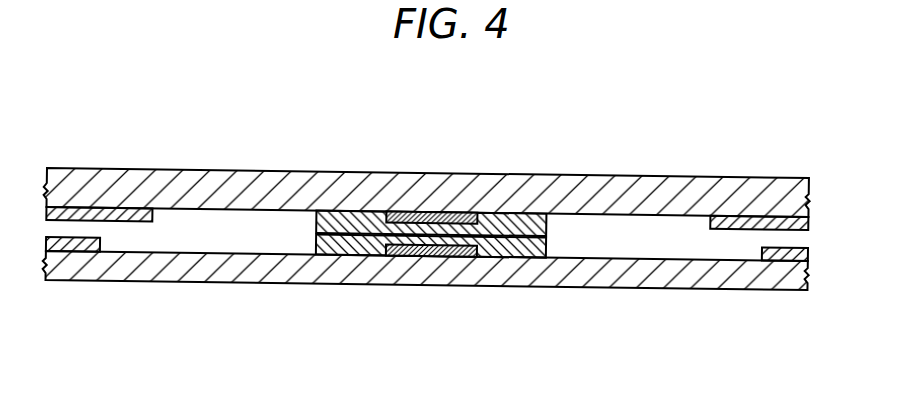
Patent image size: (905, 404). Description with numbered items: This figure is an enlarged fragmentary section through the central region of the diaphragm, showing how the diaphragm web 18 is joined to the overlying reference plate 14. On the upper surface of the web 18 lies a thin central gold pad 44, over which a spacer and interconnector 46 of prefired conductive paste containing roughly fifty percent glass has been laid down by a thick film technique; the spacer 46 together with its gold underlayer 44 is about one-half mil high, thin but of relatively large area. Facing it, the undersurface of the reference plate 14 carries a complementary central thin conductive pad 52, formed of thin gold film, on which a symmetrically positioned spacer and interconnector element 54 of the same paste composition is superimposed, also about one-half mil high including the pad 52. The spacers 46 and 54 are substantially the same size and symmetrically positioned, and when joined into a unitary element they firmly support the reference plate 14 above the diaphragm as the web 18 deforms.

The reference plate 14 is at (528, 197).
The web 18 is at (523, 268).
The spacer and interconnector element 54 is at (362, 214).
The spacer and interconnector 46 is at (343, 242).
The central thin conductive pad 52 is at (445, 217).
The central gold pad 44 is at (421, 249).